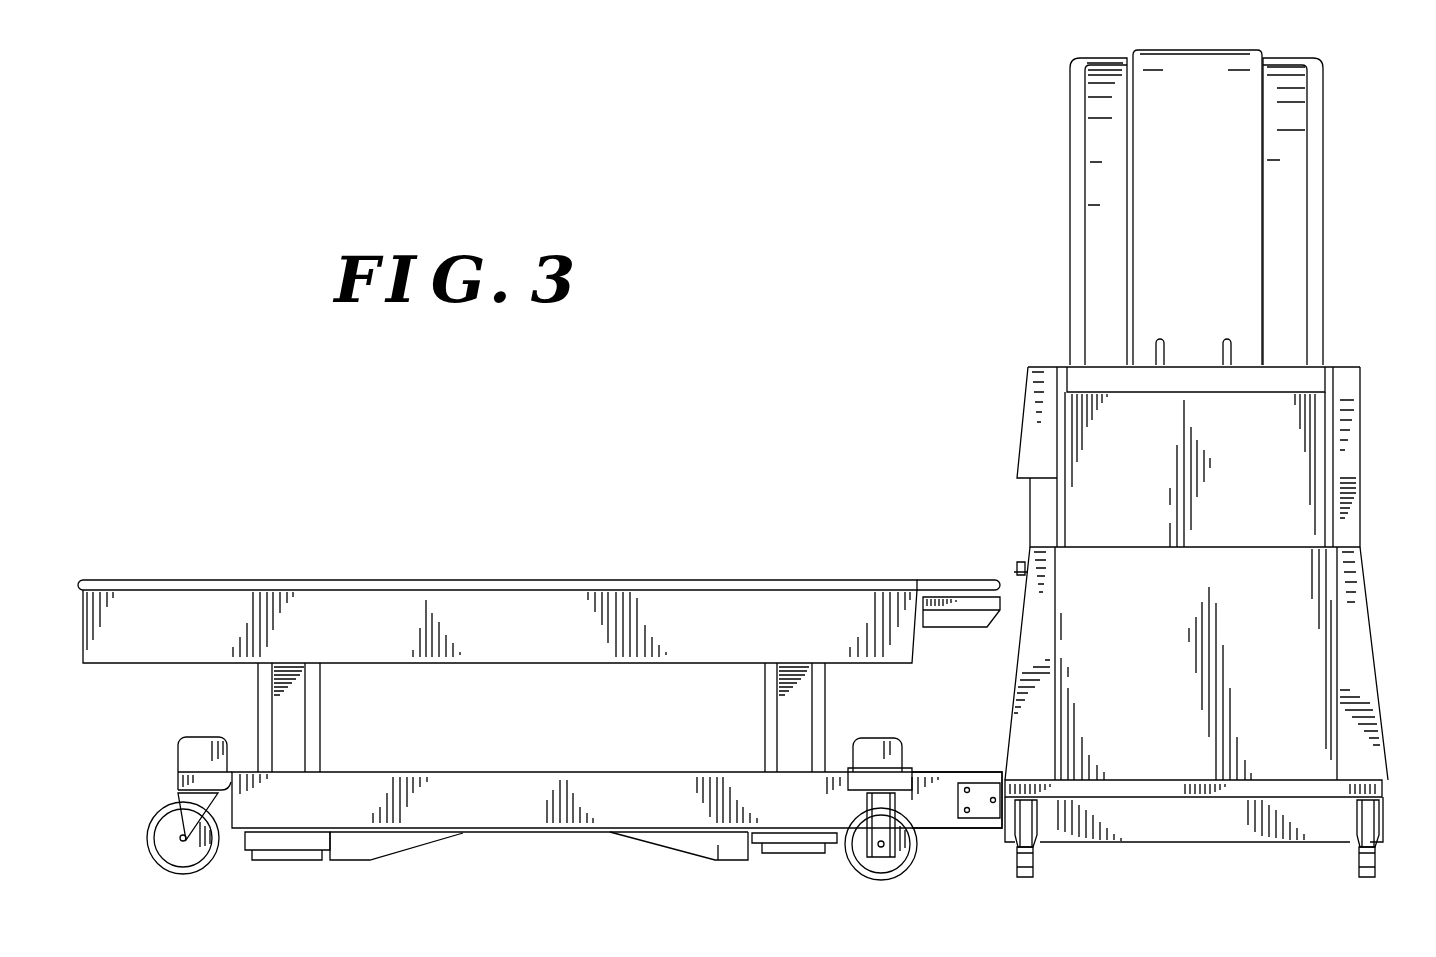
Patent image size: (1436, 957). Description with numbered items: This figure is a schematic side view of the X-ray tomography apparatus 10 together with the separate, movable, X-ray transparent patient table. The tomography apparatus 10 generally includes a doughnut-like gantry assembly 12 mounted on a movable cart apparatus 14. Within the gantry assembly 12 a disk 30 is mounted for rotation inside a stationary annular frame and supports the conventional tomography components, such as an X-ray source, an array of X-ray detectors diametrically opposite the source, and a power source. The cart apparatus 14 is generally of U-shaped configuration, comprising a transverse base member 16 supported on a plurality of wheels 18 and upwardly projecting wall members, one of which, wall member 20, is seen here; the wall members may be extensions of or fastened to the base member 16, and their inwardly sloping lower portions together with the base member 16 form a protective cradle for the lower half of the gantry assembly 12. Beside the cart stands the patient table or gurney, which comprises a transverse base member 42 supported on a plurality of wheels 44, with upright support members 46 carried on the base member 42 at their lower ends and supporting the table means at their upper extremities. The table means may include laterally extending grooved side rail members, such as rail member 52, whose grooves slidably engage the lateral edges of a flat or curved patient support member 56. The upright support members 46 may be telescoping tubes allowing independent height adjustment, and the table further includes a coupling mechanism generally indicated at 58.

The X-ray tomography apparatus 10 is at (1350, 78).
The gantry assembly 12 is at (1320, 155).
The cart apparatus 14 is at (1370, 418).
The transverse base member 16 is at (1157, 800).
The wheels 18 is at (1035, 862).
The wall member 20 is at (1365, 587).
The disk 30 is at (1017, 563).
The transverse base member 42 is at (532, 830).
The wheels 44 is at (212, 862).
The upright support members 46 is at (320, 723).
The grooved side rail member 52 is at (418, 577).
The patient support member 56 is at (945, 580).
The coupling mechanism 58 is at (952, 770).